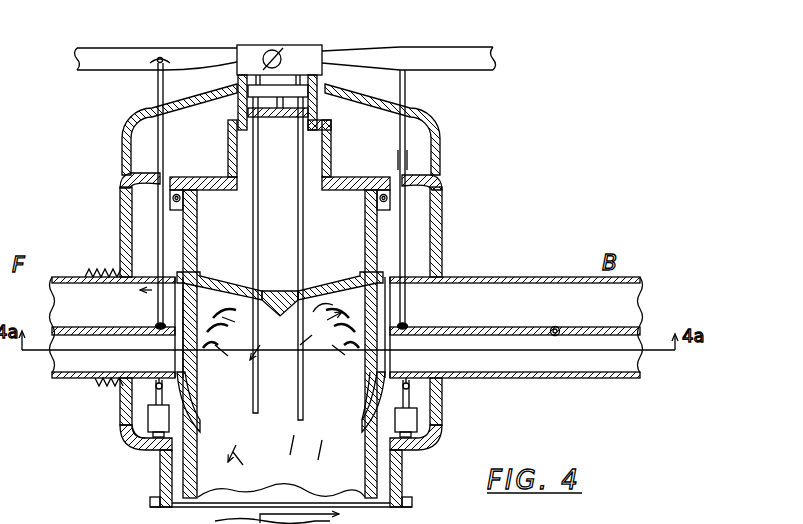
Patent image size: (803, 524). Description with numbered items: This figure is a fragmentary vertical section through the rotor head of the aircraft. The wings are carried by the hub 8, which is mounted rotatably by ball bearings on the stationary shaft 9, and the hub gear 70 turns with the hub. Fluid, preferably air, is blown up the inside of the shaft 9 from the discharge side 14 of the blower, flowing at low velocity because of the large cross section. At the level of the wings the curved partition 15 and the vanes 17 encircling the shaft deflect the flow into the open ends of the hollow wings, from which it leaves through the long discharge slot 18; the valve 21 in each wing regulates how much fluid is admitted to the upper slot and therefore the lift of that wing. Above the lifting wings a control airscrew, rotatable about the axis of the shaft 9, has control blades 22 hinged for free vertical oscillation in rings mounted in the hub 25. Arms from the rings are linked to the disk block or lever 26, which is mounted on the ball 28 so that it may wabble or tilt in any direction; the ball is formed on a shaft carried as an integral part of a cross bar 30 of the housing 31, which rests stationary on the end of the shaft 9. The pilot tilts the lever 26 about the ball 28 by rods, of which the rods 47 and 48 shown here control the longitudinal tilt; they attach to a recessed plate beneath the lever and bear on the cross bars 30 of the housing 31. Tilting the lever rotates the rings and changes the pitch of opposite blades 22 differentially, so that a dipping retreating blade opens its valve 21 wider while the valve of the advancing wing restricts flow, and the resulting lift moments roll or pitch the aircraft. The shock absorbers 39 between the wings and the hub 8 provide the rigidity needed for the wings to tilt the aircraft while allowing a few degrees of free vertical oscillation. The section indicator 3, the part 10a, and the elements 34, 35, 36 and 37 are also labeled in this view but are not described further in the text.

The section line 3 is at (307, 515).
The hub 8 is at (443, 232).
The stationary shaft 9 is at (200, 462).
The bolt 10a is at (559, 329).
The discharge side of the blower 14 is at (178, 292).
The curved partition 15 is at (356, 274).
The vanes 17 is at (377, 292).
The discharge slot 18 is at (372, 346).
The valve 21 is at (470, 328).
The control blades 22 is at (495, 62).
The hub 25 is at (316, 45).
The lever 26 is at (238, 105).
The ball 28 is at (320, 88).
The cross bar 30 is at (280, 100).
The housing 31 is at (228, 150).
The rod 34 is at (163, 128).
The rod 35 is at (400, 160).
The sleeve 36 is at (407, 85).
The bracket 37 is at (414, 179).
The shock absorber 39 is at (150, 428).
The rod 47 is at (255, 414).
The rod 48 is at (303, 416).
The hub gear 70 is at (412, 504).